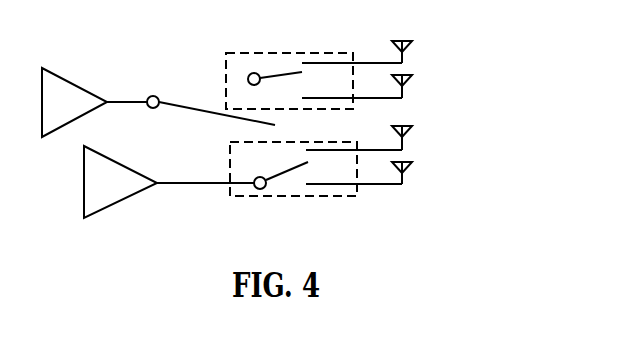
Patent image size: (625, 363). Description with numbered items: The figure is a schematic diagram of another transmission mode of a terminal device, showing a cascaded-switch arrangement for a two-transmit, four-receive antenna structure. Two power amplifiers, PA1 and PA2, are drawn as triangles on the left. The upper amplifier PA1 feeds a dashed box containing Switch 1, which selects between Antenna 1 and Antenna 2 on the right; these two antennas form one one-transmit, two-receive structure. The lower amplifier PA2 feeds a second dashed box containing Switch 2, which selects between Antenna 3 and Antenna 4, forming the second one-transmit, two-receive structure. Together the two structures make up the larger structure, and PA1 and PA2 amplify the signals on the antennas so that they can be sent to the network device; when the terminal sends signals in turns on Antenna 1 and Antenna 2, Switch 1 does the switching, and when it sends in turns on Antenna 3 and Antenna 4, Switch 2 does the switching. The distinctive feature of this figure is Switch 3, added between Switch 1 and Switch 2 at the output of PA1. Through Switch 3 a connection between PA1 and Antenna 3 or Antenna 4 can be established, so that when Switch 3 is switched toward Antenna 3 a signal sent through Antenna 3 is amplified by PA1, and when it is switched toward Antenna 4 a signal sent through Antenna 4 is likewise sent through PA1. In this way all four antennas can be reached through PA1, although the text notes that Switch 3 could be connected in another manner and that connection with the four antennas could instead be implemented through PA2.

The element PA1 is at (74, 102).
The element PA2 is at (120, 182).
The switch 1 Switch 1 is at (283, 72).
The switch 2 Switch 2 is at (280, 170).
The switch 3 Switch 3 is at (197, 108).
The antenna 1 Antenna 1 is at (454, 54).
The antenna 2 Antenna 2 is at (454, 88).
The antenna 3 Antenna 3 is at (454, 139).
The antenna 4 Antenna 4 is at (454, 175).